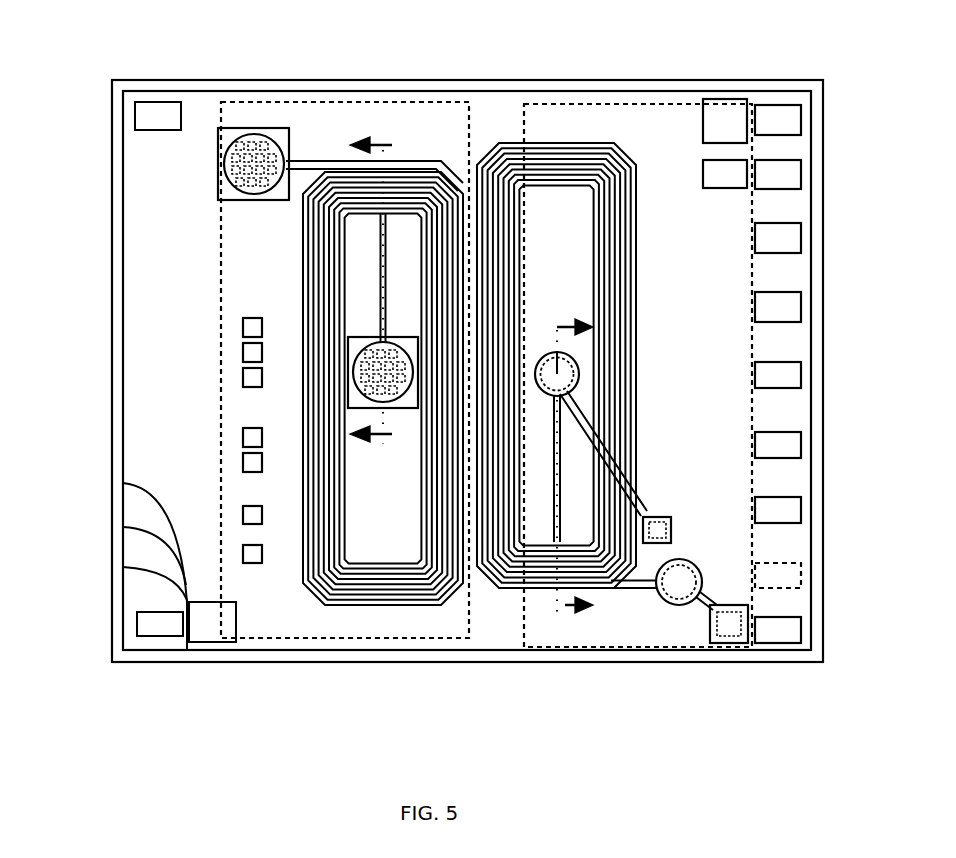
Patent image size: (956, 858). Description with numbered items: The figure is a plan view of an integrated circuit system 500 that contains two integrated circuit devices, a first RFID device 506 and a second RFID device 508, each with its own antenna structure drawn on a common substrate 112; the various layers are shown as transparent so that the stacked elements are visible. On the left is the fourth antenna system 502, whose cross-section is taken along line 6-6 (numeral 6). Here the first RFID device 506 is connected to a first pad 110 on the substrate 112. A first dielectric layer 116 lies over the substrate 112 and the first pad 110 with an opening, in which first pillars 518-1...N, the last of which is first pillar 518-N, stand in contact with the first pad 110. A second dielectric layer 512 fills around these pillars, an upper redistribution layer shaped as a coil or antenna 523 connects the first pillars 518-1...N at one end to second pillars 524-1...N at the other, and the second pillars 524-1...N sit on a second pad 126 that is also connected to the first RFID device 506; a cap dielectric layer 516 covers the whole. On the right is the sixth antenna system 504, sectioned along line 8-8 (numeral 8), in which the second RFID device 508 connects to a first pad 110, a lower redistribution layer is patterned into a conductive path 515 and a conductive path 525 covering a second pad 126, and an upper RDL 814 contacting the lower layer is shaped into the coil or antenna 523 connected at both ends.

The integrated circuit system 500 is at (124, 55).
The first RFID device 506 is at (237, 258).
The fourth antenna system 502 is at (370, 628).
The sixth antenna system 504 is at (550, 629).
The coil or antenna 523 is at (303, 281).
The second pillars 524-1...N is at (224, 163).
The second pad 126 is at (232, 193).
The first pillars 518-1...N is at (354, 367).
The first pillar 518-N is at (400, 403).
The first pad 110 is at (348, 406).
The upper RDL 814 is at (575, 356).
The conductive path 515 is at (662, 514).
The conductive path 525 is at (702, 603).
The second RFID device 508 is at (697, 288).
The cap dielectric layer 516 is at (155, 525).
The second dielectric layer 512 is at (154, 541).
The first dielectric layer 116 is at (155, 570).
The substrate 112 is at (160, 616).
The line 6- 6 is at (371, 291).
The line 8- 8 is at (575, 469).